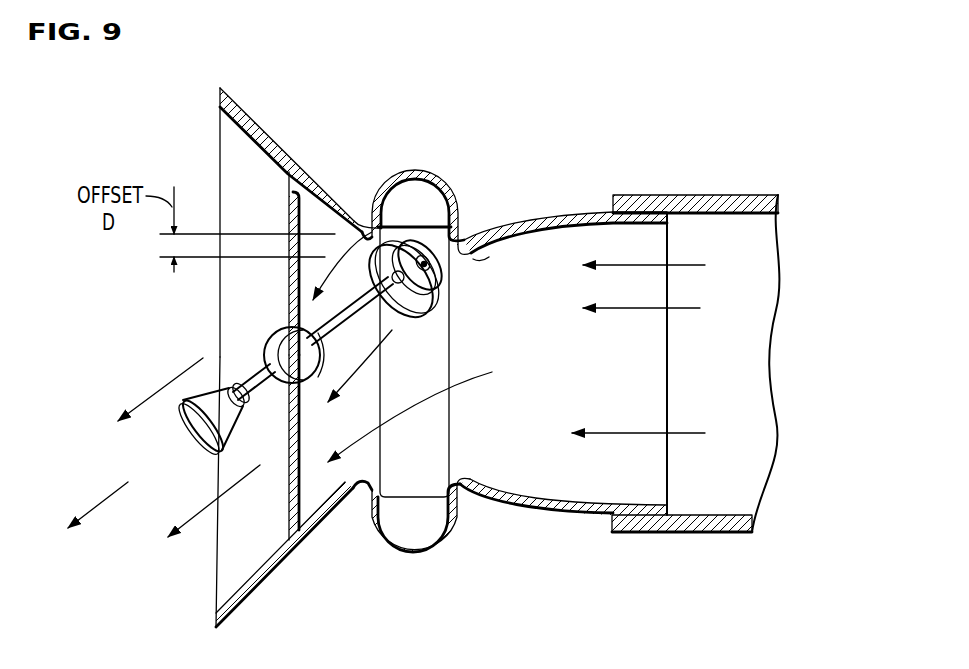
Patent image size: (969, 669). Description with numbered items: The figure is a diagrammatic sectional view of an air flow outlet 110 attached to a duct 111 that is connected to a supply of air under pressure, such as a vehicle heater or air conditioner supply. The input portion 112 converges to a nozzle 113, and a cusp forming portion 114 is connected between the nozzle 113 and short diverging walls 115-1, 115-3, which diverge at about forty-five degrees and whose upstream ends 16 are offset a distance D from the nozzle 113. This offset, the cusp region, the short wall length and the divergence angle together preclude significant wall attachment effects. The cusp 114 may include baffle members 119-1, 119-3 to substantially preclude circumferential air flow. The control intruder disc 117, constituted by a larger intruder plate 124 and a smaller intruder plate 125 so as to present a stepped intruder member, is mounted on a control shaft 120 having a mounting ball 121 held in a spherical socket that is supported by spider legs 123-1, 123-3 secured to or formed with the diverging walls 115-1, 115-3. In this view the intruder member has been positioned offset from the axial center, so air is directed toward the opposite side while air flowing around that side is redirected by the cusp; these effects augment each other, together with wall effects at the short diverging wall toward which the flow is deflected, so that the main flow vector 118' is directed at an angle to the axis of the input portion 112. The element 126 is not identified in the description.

The air flow outlet 110 is at (490, 93).
The duct 111 is at (700, 203).
The input portion 112 is at (583, 210).
The nozzle 113 is at (470, 230).
The cusp forming portion 114 is at (420, 173).
The diverging wall 115-1 is at (260, 127).
The diverging wall 115-3 is at (253, 597).
The upstream end 16 is at (363, 227).
The control intruder disc 117 is at (460, 318).
The main flow vector 118' is at (103, 522).
The baffle member 119-1 is at (433, 207).
The baffle member 119-3 is at (433, 523).
The control shaft 120 is at (219, 486).
The mounting ball 121 is at (273, 350).
The spider leg 123-1 is at (290, 302).
The spider leg 123-3 is at (290, 497).
The intruder plate 124 is at (418, 305).
The intruder plate 125 is at (448, 278).
The bell nozzle 126 is at (187, 433).